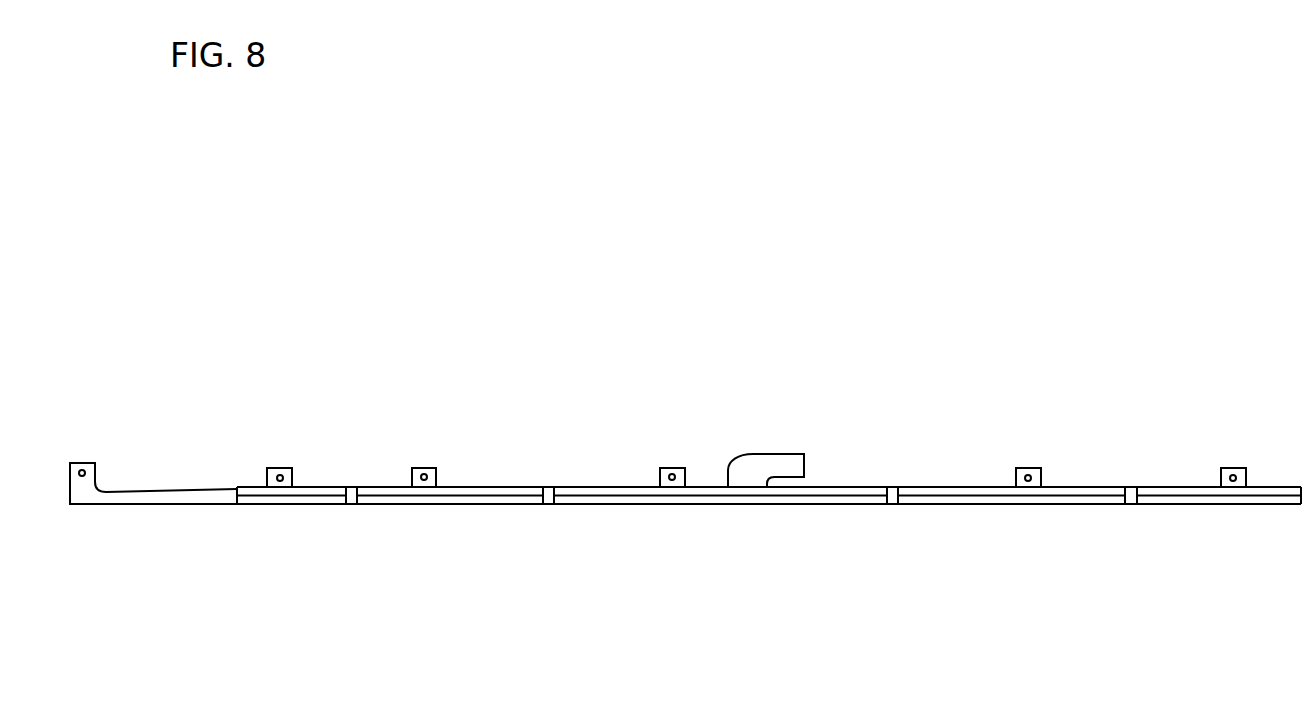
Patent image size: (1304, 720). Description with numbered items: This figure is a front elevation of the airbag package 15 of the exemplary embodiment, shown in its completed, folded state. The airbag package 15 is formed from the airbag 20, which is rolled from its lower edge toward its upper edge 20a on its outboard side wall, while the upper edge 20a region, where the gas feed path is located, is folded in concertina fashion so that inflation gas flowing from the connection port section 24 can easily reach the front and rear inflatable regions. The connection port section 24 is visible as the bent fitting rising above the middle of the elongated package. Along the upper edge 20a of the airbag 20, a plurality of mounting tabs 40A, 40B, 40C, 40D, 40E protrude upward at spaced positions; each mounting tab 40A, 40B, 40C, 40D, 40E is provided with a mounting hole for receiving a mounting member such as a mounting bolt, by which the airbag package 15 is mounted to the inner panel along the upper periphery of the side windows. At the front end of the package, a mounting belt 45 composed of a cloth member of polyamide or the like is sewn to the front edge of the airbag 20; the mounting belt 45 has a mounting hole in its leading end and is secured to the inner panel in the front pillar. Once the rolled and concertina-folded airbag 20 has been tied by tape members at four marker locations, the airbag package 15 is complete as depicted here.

The airbag package 15 is at (336, 388).
The airbag 20 is at (288, 499).
The upper edge 20a is at (512, 486).
The connection port section 24 is at (772, 463).
The mounting tab 40A is at (274, 467).
The mounting tab 40B is at (415, 467).
The mounting tab 40C is at (668, 468).
The mounting tab 40D is at (1023, 467).
The mounting tab 40E is at (1227, 467).
The mounting belt 45 is at (161, 505).